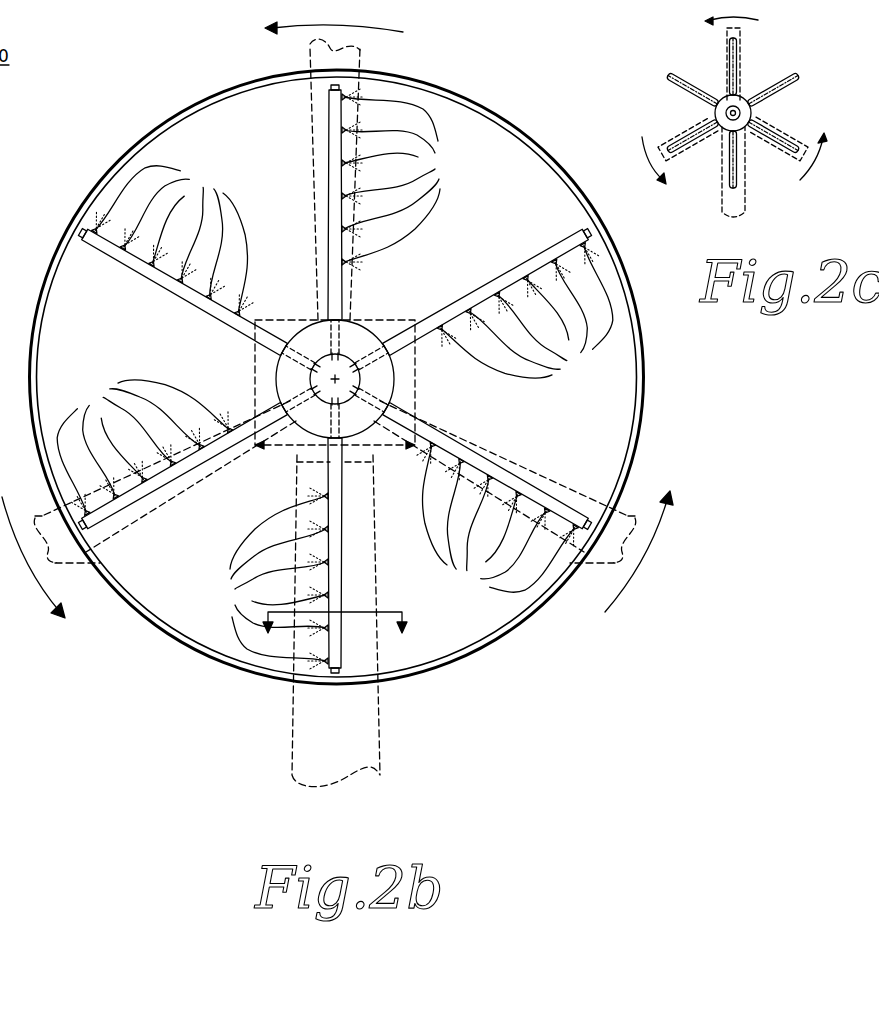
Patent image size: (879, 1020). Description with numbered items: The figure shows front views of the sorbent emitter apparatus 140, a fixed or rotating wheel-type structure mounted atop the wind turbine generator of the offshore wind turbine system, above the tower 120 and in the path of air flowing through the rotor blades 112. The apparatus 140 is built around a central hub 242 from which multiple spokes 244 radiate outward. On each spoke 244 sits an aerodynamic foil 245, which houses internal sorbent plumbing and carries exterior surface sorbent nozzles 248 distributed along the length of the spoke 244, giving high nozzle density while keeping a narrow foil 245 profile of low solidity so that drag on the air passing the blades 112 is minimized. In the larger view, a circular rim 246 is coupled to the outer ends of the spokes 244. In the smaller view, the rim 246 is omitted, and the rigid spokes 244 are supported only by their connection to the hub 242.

In FIG. 2B, the sorbent emitter apparatus 140 is at (154, 117).
In FIG. 2B, the rotor blades 112 is at (360, 66).
In FIG. 2C, the rotor blades 112 is at (734, 117).
In FIG. 2B, the tower 120 is at (352, 731).
In FIG. 2B, the hub 242 is at (368, 322).
In FIG. 2C, the hub 242 is at (747, 95).
In FIG. 2B, the spokes 244 is at (305, 325).
In FIG. 2C, the spokes 244 is at (730, 62).
In FIG. 2B, the aerodynamic foil 245 is at (318, 128).
In FIG. 2B, the circular rim 246 is at (497, 115).
In FIG. 2B, the sorbent nozzles 248 is at (334, 379).